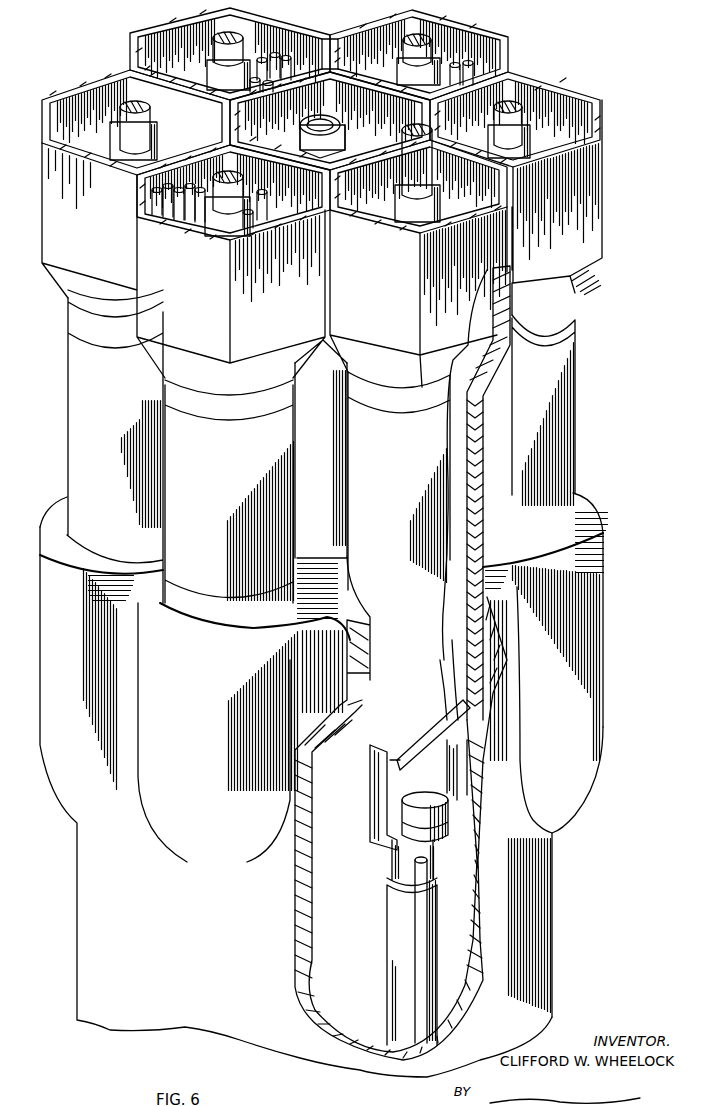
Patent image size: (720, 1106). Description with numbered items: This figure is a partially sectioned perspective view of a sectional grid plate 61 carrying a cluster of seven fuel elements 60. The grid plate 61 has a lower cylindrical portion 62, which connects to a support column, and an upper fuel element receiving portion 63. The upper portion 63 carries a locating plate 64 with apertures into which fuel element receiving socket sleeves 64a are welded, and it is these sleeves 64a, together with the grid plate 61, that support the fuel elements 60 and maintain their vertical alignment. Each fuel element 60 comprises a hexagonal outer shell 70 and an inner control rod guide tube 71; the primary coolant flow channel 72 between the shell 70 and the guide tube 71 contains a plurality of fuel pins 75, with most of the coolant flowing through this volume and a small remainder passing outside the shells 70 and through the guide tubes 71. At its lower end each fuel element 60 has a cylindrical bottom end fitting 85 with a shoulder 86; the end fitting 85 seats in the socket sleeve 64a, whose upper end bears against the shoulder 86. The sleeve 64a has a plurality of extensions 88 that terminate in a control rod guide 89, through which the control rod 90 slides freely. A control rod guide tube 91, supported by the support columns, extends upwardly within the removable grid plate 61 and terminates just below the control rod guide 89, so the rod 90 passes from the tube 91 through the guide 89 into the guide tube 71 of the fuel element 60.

The fuel element 60 is at (514, 44).
The sectional grid plate 61 is at (610, 708).
The lower cylindrical portion 62 is at (520, 960).
The upper fuel element receiving portion 63 is at (578, 746).
The locating plate 64 is at (517, 592).
The fuel element receiving socket sleeve 64a is at (485, 492).
The hexagonal outer shell 70 is at (565, 98).
The inner control rod guide tube 71 is at (525, 146).
The primary coolant flow channel 72 is at (362, 24).
The fuel pins 75 is at (270, 60).
The cylindrical bottom end fitting 85 is at (448, 636).
The shoulder 86 is at (480, 397).
The extensions 88 is at (378, 797).
The control rod guide 89 is at (428, 836).
The control rod 90 is at (432, 45).
The control rod guide tube 91 is at (405, 962).